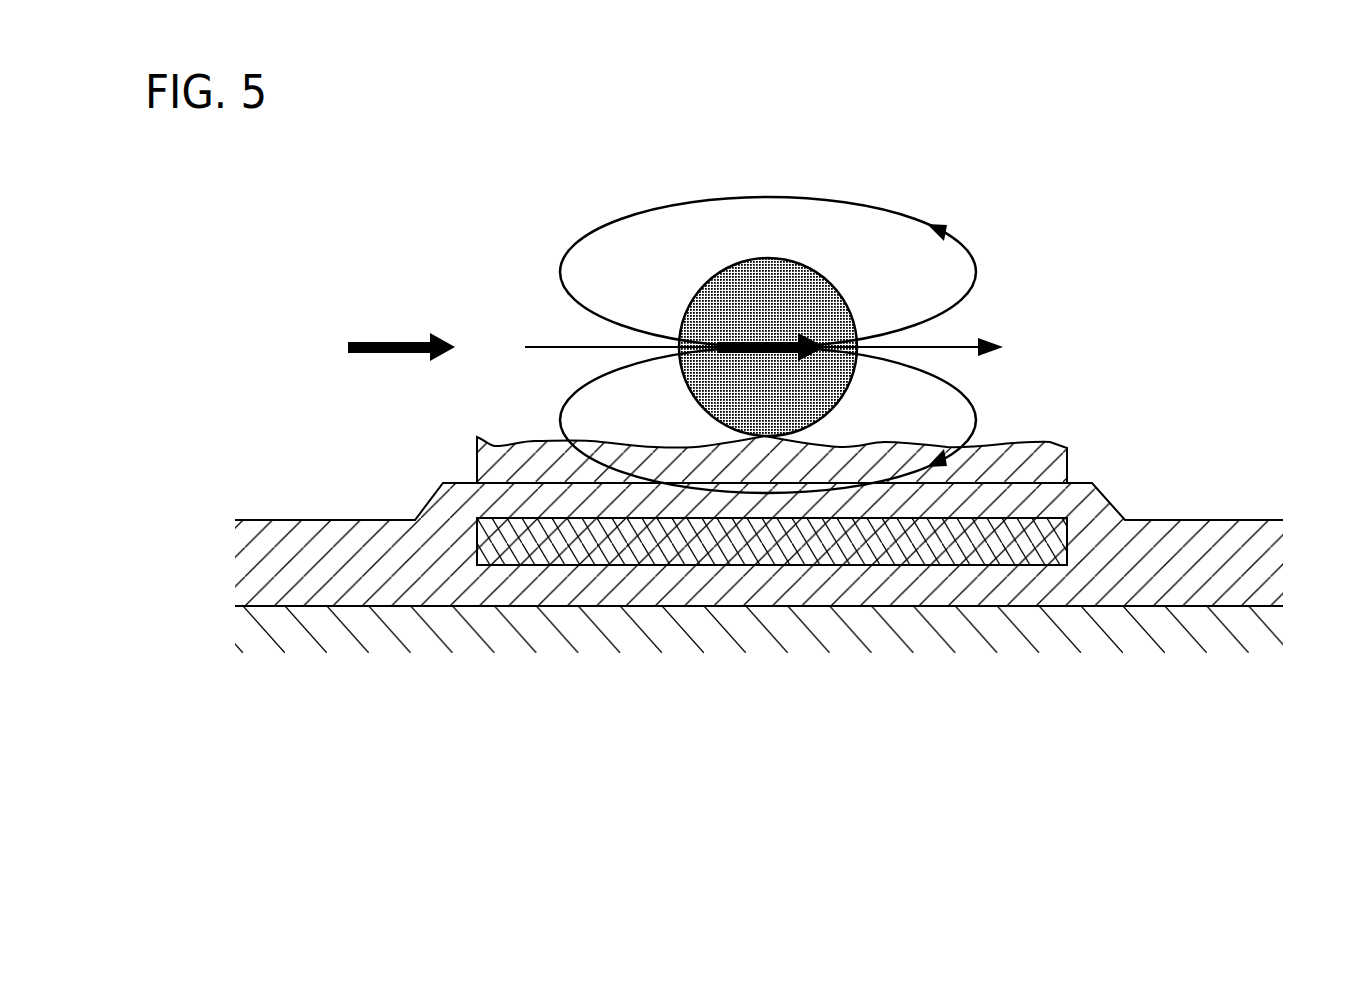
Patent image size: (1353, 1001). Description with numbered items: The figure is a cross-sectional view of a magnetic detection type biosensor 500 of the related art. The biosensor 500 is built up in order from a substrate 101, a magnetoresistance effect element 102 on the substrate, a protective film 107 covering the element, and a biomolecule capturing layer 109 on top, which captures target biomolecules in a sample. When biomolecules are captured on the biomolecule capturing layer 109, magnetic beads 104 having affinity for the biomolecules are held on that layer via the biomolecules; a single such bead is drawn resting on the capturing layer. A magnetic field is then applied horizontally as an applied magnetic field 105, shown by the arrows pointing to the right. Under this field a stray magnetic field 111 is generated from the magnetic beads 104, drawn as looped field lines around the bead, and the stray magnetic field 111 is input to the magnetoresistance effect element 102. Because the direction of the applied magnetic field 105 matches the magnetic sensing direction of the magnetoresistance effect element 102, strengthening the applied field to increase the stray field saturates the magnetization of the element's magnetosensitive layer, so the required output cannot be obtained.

The biosensor 500 is at (1202, 229).
The substrate 101 is at (805, 628).
The magnetoresistance effect element 102 is at (943, 545).
The protective film 107 is at (1093, 482).
The biomolecule capturing layer 109 is at (1019, 442).
The magnetic beads 104 is at (713, 300).
The applied magnetic field 105 is at (400, 340).
The stray magnetic field 111 is at (978, 283).